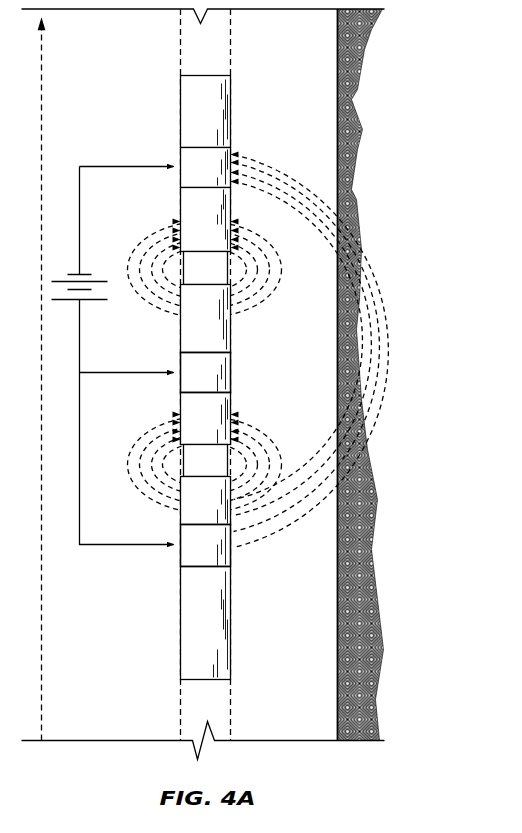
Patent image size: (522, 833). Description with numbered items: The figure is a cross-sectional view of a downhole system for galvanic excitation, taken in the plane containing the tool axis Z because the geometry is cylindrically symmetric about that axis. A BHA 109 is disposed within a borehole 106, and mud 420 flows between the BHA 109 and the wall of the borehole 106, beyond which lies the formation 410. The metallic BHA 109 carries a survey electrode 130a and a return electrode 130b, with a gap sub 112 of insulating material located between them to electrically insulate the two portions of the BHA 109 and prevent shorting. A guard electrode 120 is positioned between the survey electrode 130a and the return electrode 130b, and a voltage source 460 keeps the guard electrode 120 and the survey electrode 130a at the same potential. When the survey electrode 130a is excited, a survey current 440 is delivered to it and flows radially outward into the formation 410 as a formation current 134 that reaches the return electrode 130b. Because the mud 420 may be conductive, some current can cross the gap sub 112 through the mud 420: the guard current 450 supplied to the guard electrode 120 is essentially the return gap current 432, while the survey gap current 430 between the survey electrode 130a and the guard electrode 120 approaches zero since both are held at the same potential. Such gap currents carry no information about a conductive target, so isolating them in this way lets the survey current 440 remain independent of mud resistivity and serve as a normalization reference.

The borehole 106 is at (338, 62).
The BHA 109 is at (181, 110).
The gap sub 112 is at (183, 270).
The guard electrode 120 is at (232, 373).
The survey electrode 130a is at (228, 548).
The return electrode 130b is at (236, 165).
The formation current 134 is at (390, 355).
The formation 410 is at (388, 103).
The mud 420 is at (132, 725).
The survey gap current 430 is at (289, 478).
The return gap current 432 is at (288, 288).
The survey current 440 is at (130, 548).
The guard current 450 is at (130, 375).
The voltage source 460 is at (88, 302).
The tool axis Z is at (47, 146).